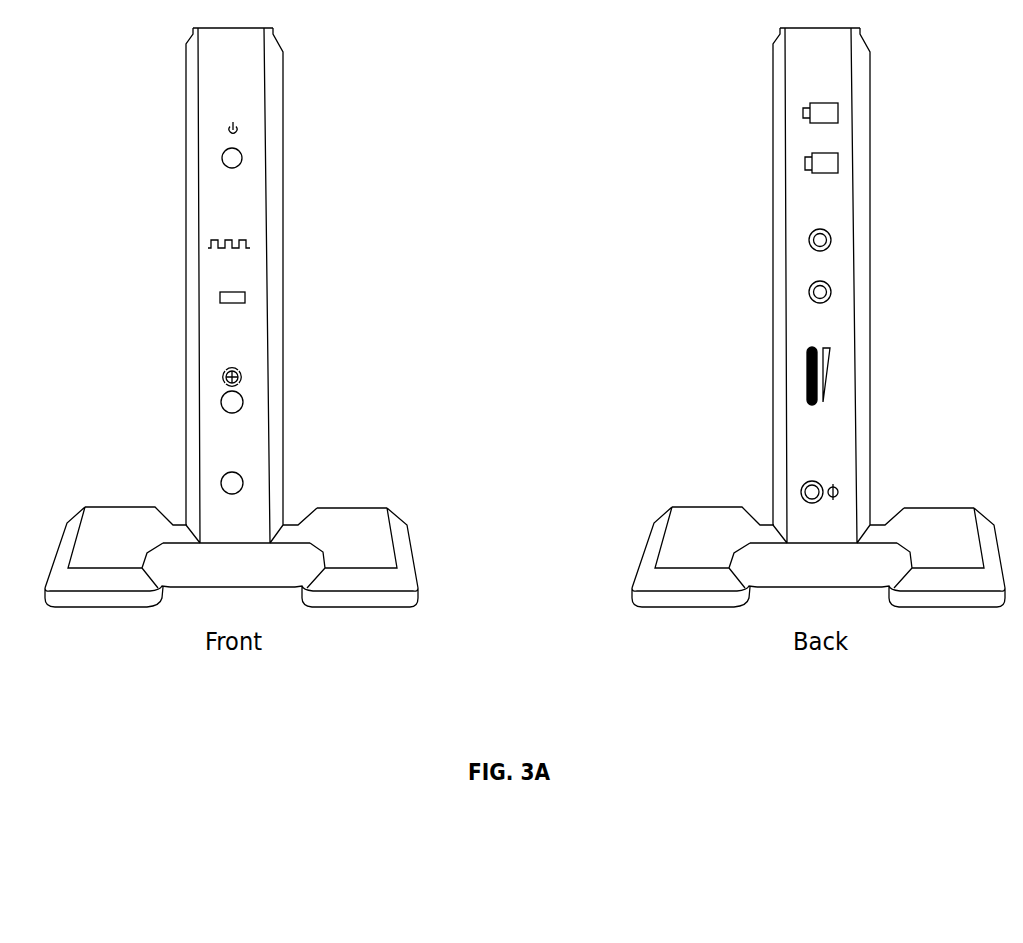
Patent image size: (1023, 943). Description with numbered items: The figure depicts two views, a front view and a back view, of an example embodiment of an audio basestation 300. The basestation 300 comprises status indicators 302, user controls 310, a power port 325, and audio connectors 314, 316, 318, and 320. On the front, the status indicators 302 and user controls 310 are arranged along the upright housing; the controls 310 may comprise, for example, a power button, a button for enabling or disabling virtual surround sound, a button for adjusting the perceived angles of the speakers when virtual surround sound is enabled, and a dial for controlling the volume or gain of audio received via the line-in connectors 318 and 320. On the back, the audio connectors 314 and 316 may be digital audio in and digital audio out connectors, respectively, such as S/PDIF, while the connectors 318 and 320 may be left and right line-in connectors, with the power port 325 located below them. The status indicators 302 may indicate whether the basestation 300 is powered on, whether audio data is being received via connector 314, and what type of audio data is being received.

The audio basestation 300 is at (123, 143).
The status indicators 302 is at (228, 127).
The user controls 310 is at (232, 168).
The audio connector 314 is at (824, 102).
The audio connector 316 is at (824, 153).
The audio connector 318 is at (818, 229).
The audio connector 320 is at (818, 281).
The power port 325 is at (808, 482).